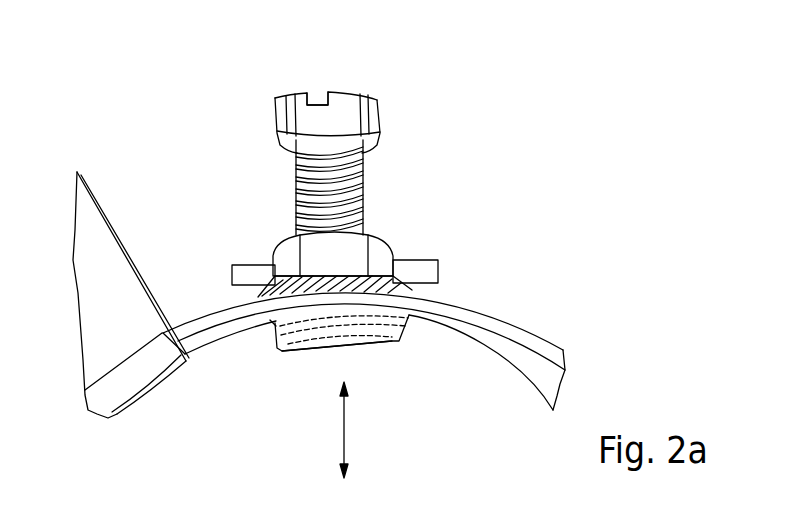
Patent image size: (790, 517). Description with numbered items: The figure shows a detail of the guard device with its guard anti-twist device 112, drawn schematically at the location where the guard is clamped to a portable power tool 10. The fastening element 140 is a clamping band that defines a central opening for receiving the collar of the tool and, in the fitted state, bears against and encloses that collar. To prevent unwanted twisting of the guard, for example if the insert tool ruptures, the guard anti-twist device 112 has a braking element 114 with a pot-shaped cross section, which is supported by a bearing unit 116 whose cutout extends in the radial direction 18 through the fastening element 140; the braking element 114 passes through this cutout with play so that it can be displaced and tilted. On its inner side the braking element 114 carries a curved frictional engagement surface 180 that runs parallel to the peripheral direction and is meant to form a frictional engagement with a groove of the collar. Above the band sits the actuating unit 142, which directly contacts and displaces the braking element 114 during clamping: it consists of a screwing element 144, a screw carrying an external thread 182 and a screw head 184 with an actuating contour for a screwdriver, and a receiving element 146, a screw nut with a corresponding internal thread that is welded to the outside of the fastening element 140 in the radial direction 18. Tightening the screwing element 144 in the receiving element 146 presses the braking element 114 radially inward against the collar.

The blade / fin 10 is at (113, 277).
The radial direction 18 is at (347, 430).
The guard anti-twist device 112 is at (408, 214).
The braking element 114 is at (398, 348).
The bearing unit 116 is at (417, 252).
The fastening element 140 is at (504, 344).
The actuating unit 142 is at (343, 118).
The screwing element 144 is at (360, 96).
The receiving element 146 is at (383, 230).
The frictional engagement surface 180 is at (322, 350).
The external thread 182 is at (360, 163).
The screw head 184 is at (294, 96).